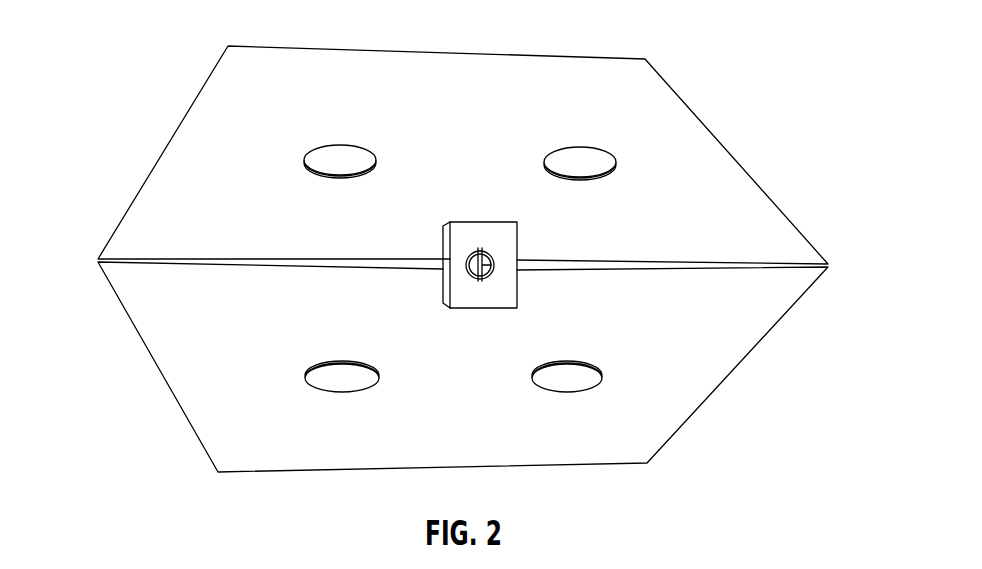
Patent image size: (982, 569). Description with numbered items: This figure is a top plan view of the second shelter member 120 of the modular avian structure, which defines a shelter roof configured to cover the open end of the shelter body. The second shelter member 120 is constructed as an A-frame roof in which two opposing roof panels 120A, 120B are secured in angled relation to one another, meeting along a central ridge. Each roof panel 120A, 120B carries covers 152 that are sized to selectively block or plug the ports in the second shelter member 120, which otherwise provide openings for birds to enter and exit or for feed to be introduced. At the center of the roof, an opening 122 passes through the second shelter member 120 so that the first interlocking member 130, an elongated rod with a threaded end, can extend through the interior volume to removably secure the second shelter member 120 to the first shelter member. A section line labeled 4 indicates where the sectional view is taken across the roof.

The second shelter member 120 is at (463, 248).
The roof panel 120A is at (668, 108).
The roof panel 120B is at (708, 363).
The cover 152 is at (556, 169).
The opening 122 is at (480, 236).
The first interlocking member 130 is at (492, 266).
The section line 4 is at (98, 260).